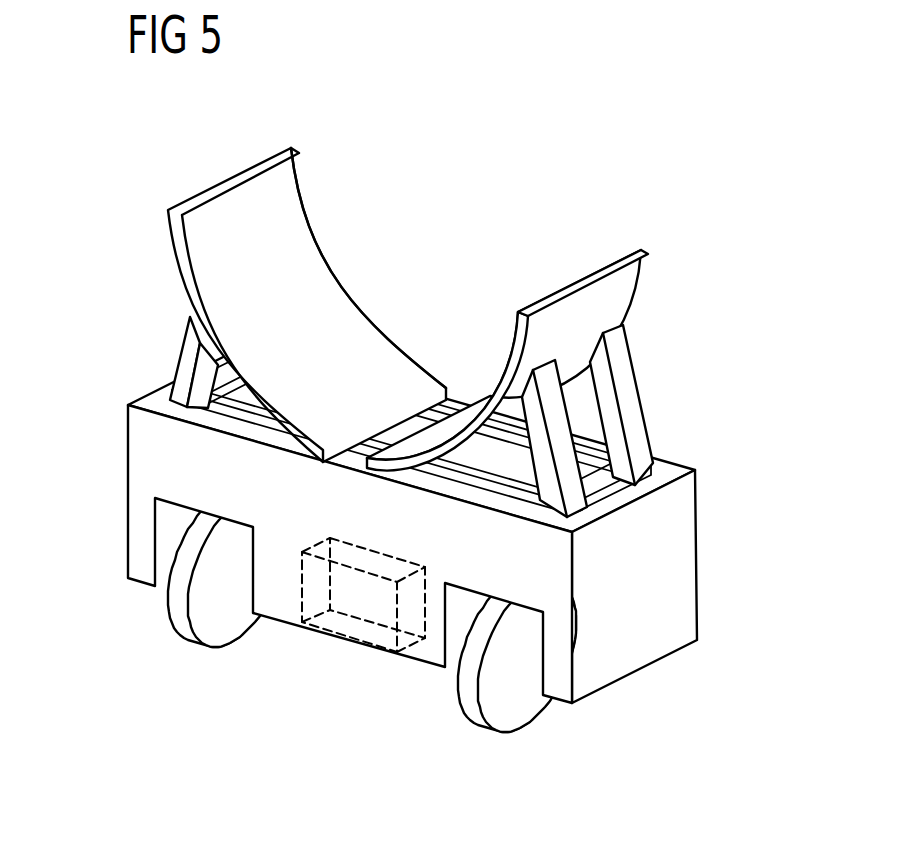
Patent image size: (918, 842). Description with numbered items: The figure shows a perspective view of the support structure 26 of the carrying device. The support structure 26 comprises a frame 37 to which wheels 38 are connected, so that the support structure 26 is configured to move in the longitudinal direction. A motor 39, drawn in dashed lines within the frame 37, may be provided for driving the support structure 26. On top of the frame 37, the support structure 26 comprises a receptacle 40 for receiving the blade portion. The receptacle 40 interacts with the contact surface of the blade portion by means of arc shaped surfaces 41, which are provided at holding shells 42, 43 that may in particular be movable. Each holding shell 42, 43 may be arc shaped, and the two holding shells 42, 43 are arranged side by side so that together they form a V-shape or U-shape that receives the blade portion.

The support structure 26 is at (728, 283).
The frame 37 is at (697, 553).
The wheels 38 is at (181, 608).
The motor 39 is at (377, 612).
The receptacle 40 is at (453, 308).
The arc shaped surfaces 41 is at (310, 267).
The holding shell 42 is at (212, 160).
The holding shell 43 is at (600, 241).